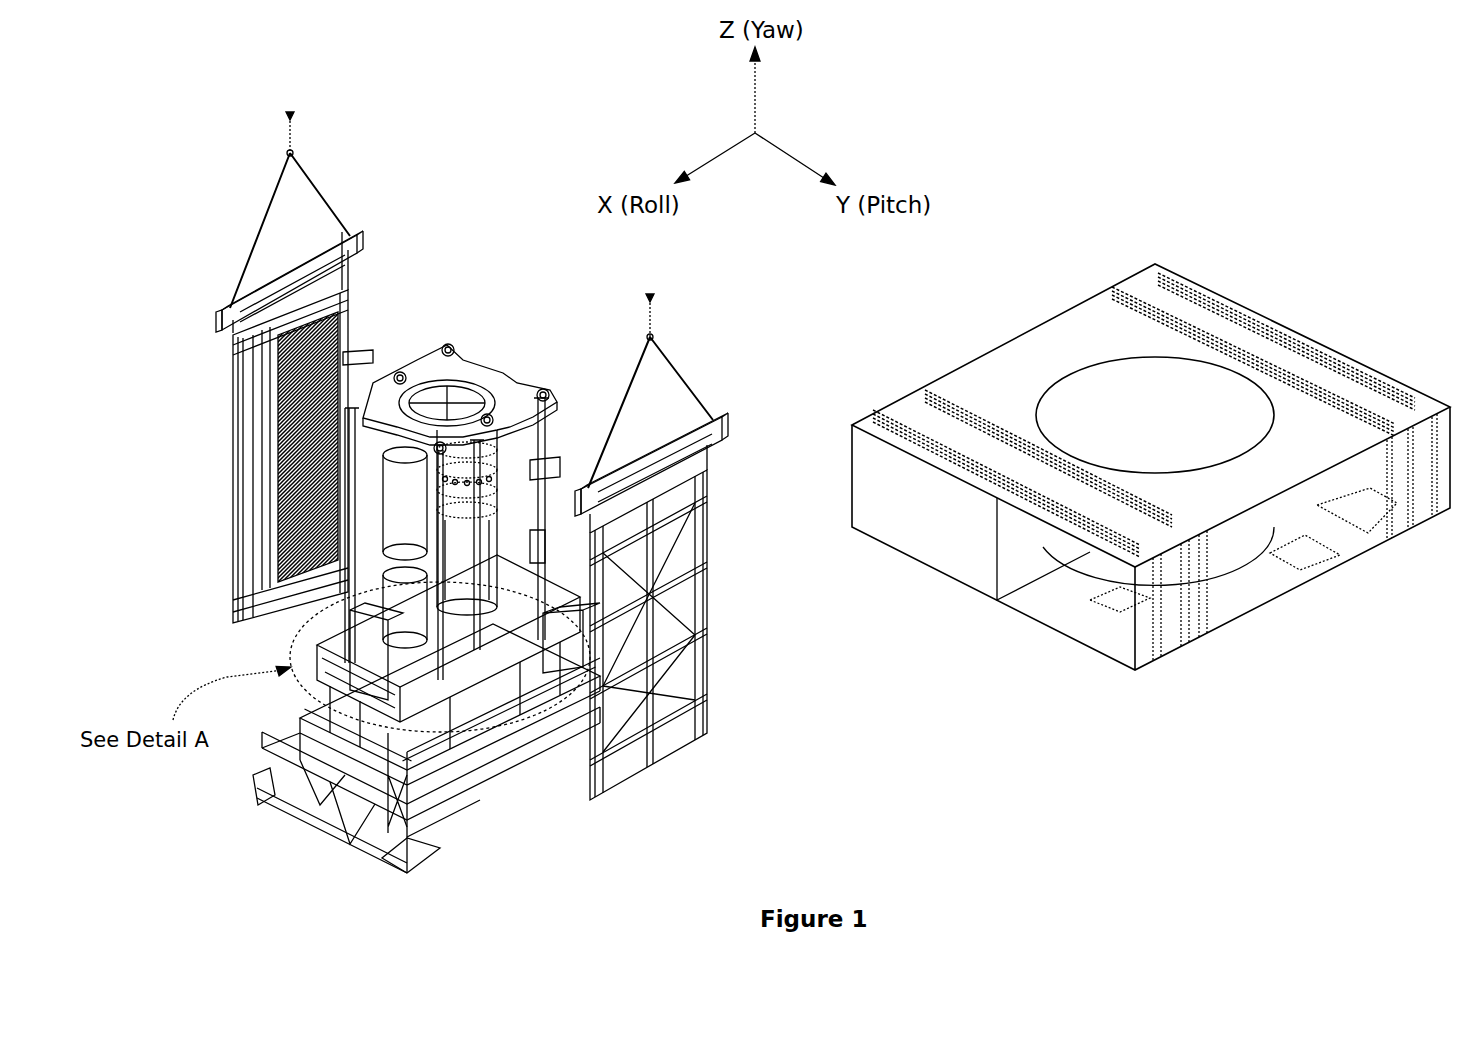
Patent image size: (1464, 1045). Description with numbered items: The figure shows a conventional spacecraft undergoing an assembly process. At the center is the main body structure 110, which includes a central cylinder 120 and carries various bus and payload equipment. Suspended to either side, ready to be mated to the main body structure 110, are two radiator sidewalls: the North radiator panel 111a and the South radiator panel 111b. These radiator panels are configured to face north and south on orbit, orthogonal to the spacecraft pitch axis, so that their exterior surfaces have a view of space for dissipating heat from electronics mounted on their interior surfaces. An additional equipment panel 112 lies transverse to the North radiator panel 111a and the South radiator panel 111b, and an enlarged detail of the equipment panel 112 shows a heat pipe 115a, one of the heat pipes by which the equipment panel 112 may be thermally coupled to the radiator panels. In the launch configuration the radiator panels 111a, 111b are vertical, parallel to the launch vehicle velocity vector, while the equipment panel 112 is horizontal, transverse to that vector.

The main body structure 110 is at (484, 305).
The North radiator panel 111a is at (673, 662).
The South radiator panel 111b is at (232, 433).
The equipment panel 112 is at (313, 617).
The heat pipe 115a is at (1209, 593).
The central cylinder 120 is at (512, 453).